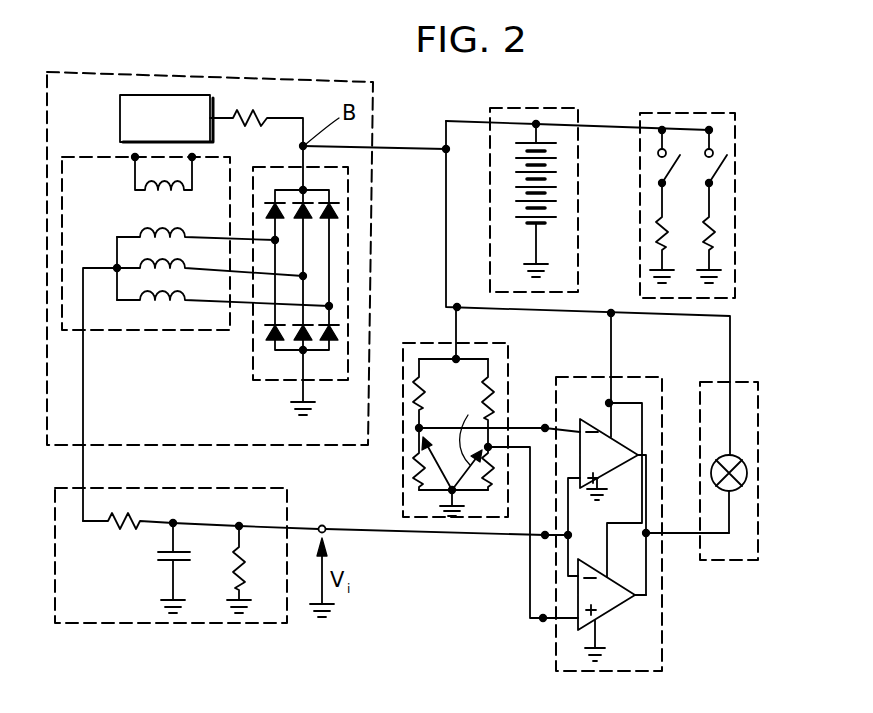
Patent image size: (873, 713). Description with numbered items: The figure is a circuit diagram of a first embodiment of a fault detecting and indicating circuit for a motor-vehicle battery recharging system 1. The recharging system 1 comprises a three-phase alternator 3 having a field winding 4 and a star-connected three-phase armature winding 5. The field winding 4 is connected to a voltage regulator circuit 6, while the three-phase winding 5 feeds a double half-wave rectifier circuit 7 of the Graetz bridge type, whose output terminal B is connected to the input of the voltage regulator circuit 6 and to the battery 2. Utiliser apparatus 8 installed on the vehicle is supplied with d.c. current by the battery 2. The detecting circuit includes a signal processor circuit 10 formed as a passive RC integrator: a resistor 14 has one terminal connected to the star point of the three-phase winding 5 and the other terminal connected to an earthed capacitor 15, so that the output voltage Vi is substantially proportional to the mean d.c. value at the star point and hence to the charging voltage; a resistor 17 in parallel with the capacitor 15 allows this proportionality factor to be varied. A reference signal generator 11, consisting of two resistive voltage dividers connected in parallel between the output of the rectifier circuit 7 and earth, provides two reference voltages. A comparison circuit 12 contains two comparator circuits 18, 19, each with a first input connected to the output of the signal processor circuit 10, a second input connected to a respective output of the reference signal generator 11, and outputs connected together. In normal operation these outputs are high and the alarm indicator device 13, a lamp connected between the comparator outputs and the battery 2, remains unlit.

The recharging system 1 is at (340, 448).
The battery 2 is at (571, 106).
The three-phase alternator 3 is at (56, 318).
The field winding 4 is at (135, 190).
The three-phase armature winding 5 is at (108, 238).
The voltage regulator circuit 6 is at (180, 95).
The rectifier circuit 7 is at (356, 338).
The utiliser apparatus 8 is at (727, 112).
The signal processor circuit 10 is at (187, 575).
The reference signal generator 11 is at (512, 356).
The comparison circuit 12 is at (645, 492).
The alarm indicator device 13 is at (727, 455).
The resistor 14 is at (120, 525).
The capacitor 15 is at (183, 565).
The resistor 17 is at (250, 568).
The comparator circuit 18 is at (602, 452).
The comparator circuit 19 is at (610, 596).